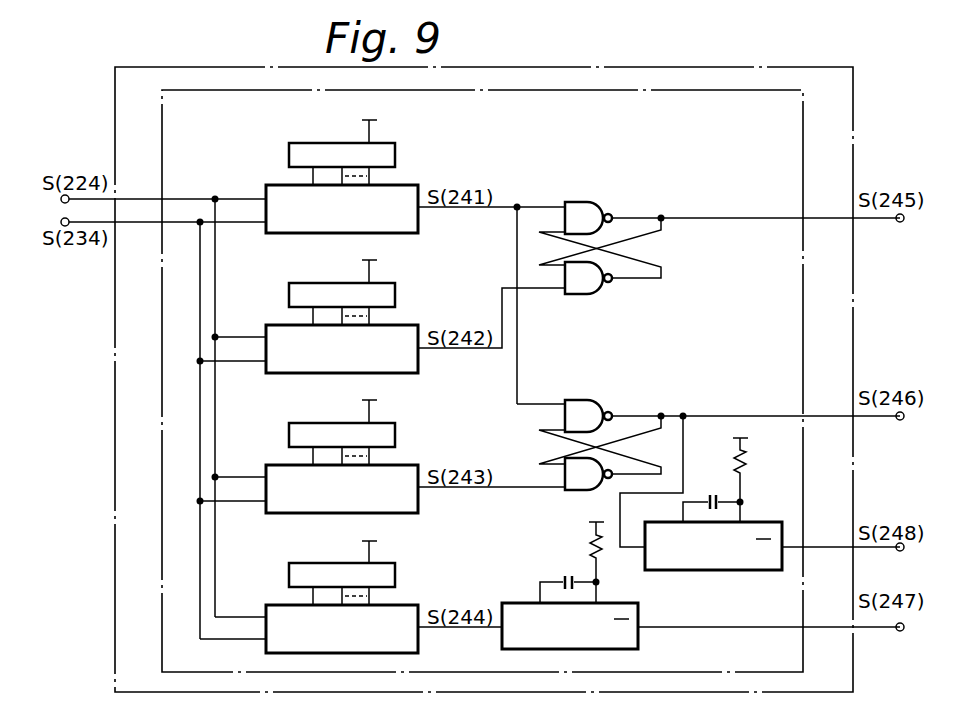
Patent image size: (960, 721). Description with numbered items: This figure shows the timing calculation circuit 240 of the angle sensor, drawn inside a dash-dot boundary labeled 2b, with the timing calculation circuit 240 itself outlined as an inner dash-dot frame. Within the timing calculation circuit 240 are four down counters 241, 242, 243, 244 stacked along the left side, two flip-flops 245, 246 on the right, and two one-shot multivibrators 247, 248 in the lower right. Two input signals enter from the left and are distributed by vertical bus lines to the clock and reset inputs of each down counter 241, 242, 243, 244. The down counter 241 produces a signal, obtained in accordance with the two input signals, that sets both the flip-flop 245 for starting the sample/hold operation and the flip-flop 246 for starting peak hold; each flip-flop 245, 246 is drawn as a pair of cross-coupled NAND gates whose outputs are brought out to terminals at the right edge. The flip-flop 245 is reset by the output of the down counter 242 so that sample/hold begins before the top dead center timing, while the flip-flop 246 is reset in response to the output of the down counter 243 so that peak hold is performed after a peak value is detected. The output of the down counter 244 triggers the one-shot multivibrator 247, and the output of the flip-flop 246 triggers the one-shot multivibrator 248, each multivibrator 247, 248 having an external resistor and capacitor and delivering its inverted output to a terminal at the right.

The signal processing unit 2b is at (758, 48).
The timing calculation circuit 240 is at (619, 90).
The down counter 241 is at (270, 186).
The down counter 242 is at (277, 326).
The down counter 243 is at (277, 466).
The down counter 244 is at (277, 606).
The flip-flop 245 is at (606, 204).
The flip-flop 246 is at (606, 402).
The one-shot multivibrator 247 is at (638, 645).
The one-shot multivibrator 248 is at (718, 571).